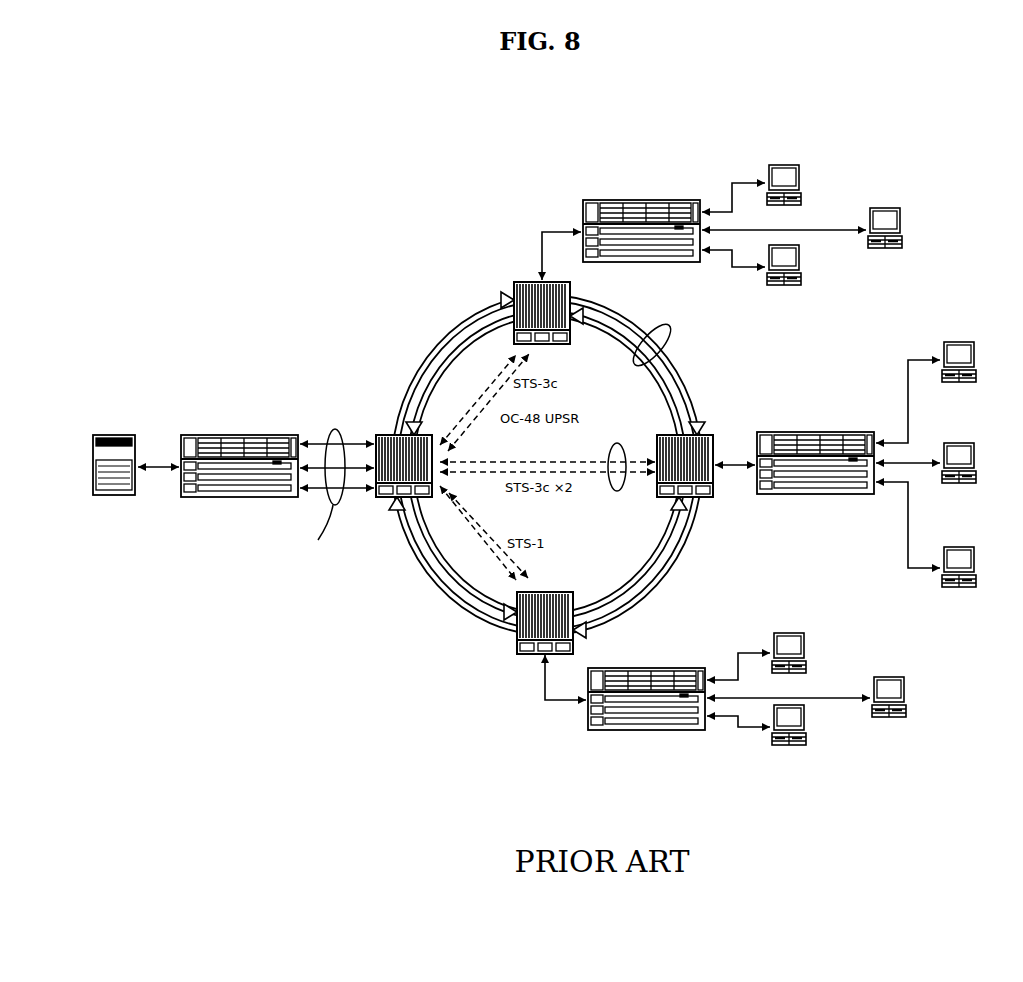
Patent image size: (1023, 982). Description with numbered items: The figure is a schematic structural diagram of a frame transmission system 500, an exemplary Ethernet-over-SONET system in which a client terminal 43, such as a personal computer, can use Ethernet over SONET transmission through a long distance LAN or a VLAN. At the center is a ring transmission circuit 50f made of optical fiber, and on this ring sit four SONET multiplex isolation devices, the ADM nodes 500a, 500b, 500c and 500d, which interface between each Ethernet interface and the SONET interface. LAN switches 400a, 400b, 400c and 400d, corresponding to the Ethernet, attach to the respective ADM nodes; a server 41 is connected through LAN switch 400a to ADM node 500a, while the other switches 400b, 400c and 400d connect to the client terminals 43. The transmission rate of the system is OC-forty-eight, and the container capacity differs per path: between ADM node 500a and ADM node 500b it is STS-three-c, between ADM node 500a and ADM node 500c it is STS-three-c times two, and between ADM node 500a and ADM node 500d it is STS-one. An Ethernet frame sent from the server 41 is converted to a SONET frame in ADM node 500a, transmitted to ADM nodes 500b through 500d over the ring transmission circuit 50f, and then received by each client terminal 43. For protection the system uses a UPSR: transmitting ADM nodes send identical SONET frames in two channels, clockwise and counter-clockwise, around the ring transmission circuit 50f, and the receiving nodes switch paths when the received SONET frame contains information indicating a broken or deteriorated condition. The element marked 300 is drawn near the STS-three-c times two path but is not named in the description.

The server 41 is at (113, 433).
The client terminal 43 is at (871, 465).
The STS-3c x2 channel 300 is at (615, 443).
The LAN switch 400a is at (242, 434).
The LAN switch 400b is at (640, 199).
The LAN switch 400c is at (818, 431).
The LAN switch 400d is at (650, 667).
The frame transmission system 500 is at (374, 628).
The ADM node 500a is at (386, 434).
The ADM node 500b is at (522, 281).
The ADM node 500c is at (706, 434).
The ADM node 500d is at (566, 592).
The ring transmission circuit 50f is at (667, 333).